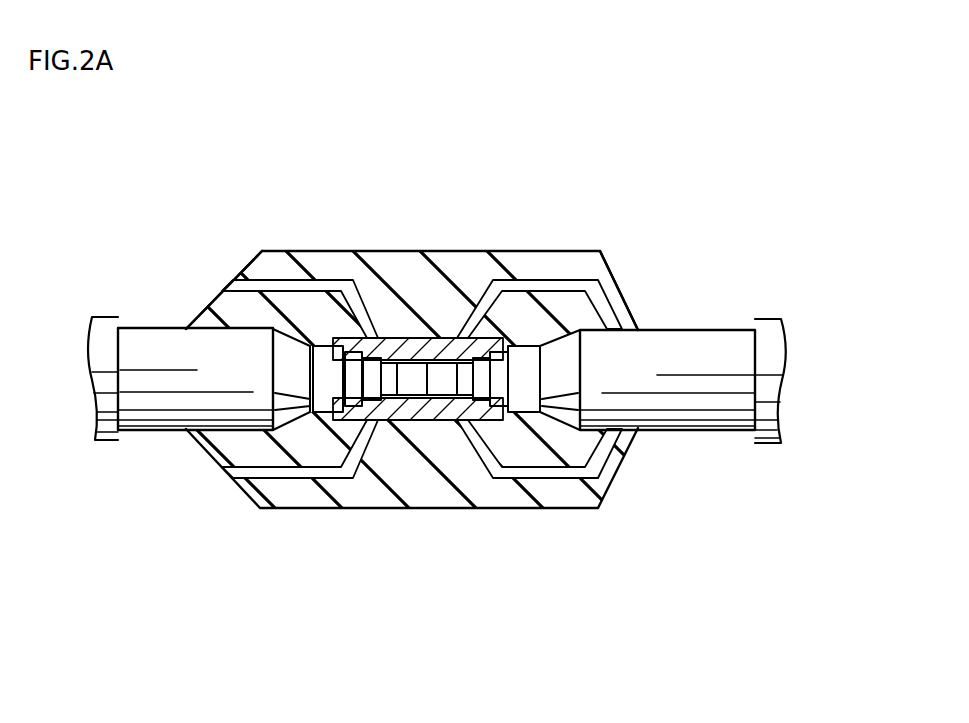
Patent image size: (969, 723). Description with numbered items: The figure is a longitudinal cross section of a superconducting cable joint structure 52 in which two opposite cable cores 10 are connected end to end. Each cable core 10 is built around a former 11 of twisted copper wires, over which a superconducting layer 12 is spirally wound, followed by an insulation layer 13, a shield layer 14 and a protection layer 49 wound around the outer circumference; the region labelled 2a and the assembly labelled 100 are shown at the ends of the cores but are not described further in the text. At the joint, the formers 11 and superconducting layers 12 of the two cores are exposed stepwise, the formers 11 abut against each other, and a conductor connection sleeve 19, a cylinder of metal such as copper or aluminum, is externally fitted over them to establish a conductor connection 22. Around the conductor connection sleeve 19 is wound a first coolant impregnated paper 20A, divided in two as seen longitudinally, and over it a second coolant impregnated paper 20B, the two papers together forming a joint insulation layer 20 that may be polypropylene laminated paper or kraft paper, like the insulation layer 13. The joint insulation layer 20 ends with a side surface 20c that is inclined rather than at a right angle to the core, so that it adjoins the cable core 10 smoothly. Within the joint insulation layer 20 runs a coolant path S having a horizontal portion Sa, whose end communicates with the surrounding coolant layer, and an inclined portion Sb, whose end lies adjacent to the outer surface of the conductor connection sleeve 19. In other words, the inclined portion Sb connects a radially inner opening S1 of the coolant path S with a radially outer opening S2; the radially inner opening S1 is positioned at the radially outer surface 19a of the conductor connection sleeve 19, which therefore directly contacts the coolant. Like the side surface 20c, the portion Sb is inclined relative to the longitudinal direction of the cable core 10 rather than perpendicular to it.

The housing hole 2a is at (187, 297).
The cable core 10 is at (158, 353).
The former 11 is at (417, 420).
The superconducting layer 12 is at (364, 412).
The insulation layer 13 is at (293, 432).
The shield layer 14 is at (178, 417).
The conductor connection sleeve 19 is at (408, 335).
The radially outer surface 19a is at (352, 335).
The joint insulation layer 20 is at (488, 126).
The first coolant impregnated paper 20A is at (590, 310).
The second coolant impregnated paper 20B is at (510, 268).
The side surface 20c is at (650, 308).
The conductor connection 22 is at (422, 398).
The protection layer 49 is at (93, 422).
The superconducting cable joint structure 52 is at (791, 96).
The pipe assembly 100 is at (69, 343).
The coolant path S is at (237, 280).
The radially inner opening S1 is at (456, 300).
The radially outer opening S2 is at (242, 290).
The horizontal portion Sa is at (313, 267).
The inclined portion Sb is at (382, 297).